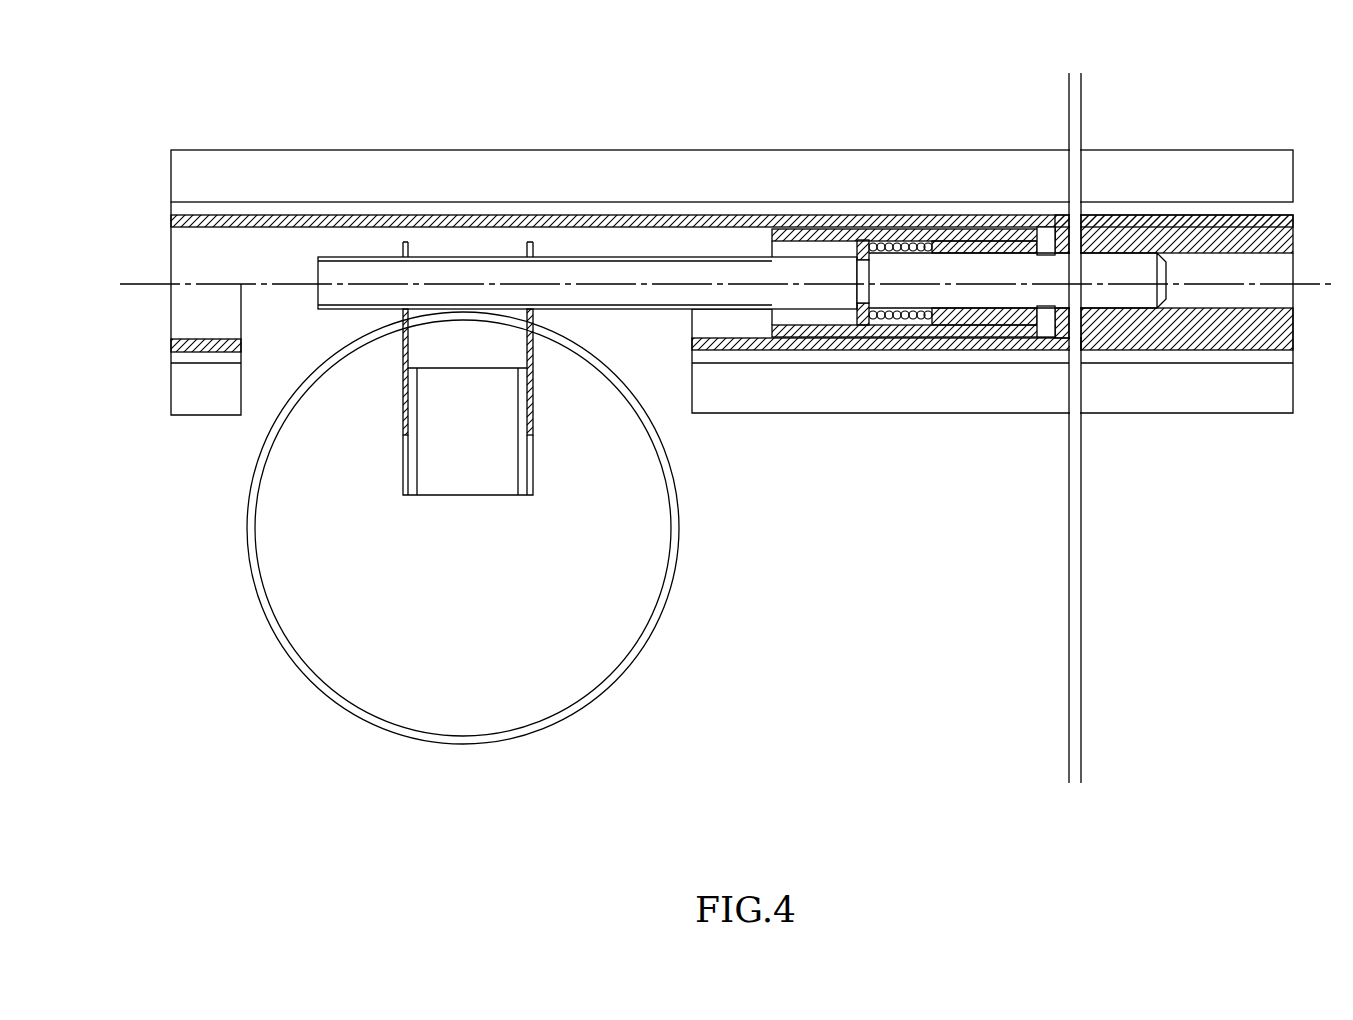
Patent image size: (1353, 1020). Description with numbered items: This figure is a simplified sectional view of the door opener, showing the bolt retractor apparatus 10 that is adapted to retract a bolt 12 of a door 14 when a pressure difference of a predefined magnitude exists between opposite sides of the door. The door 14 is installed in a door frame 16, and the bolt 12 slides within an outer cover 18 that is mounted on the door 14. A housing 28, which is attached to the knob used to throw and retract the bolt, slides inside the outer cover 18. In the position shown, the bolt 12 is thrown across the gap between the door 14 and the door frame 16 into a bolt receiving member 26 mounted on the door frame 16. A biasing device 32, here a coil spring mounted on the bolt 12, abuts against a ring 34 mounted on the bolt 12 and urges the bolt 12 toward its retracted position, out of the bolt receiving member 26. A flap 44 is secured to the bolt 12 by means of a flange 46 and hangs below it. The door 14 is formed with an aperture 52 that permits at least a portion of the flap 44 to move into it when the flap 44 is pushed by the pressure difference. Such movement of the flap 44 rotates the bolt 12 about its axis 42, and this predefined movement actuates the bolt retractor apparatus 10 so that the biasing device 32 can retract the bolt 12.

The bolt retractor apparatus 10 is at (856, 533).
The bolt 12 is at (1128, 295).
The door 14 is at (1016, 77).
The door frame 16 is at (1178, 77).
The outer cover 18 is at (728, 217).
The bolt receiving member 26 is at (1232, 225).
The housing 28 is at (980, 345).
The biasing device 32 is at (896, 325).
The ring 34 is at (852, 322).
The axis 42 is at (1302, 284).
The flap 44 is at (585, 615).
The flange 46 is at (465, 435).
The aperture 52 is at (605, 688).